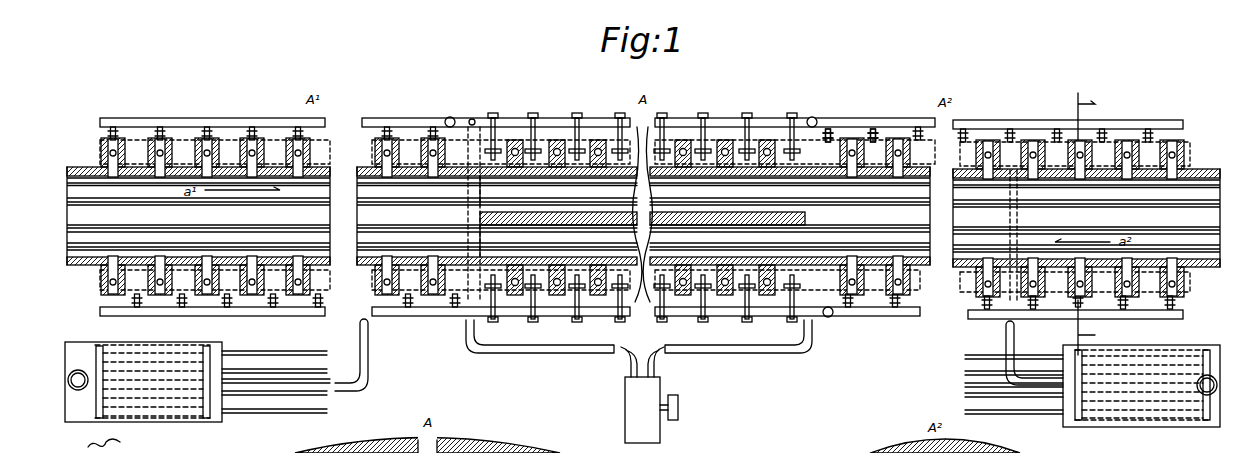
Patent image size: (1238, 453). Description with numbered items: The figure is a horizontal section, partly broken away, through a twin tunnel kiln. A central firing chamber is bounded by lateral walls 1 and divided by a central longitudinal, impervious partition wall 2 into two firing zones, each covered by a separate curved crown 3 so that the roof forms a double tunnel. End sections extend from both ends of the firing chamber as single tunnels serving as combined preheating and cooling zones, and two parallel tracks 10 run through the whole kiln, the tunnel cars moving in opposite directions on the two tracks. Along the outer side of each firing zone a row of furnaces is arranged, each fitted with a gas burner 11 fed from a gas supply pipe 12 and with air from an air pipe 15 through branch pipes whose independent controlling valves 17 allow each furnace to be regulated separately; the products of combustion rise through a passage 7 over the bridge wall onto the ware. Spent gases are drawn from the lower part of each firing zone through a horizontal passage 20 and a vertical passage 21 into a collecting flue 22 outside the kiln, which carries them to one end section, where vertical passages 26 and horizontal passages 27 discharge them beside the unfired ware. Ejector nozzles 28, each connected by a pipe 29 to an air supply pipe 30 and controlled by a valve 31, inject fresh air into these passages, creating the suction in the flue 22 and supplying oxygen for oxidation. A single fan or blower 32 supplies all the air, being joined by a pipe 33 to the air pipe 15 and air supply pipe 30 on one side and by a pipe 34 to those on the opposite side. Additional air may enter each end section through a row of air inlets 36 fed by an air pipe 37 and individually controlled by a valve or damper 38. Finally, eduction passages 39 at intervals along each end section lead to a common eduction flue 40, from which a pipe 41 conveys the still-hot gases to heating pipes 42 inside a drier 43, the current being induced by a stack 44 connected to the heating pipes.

The lateral wall 1 is at (690, 268).
The longitudinal partition wall 2 is at (565, 213).
The crown 3 is at (352, 440).
The passage 7 is at (483, 178).
The track 10 is at (643, 217).
The gas burner 11 is at (540, 132).
The gas supply pipe 12 is at (660, 150).
The air pipe 15 is at (520, 118).
The controlling valve 17 is at (622, 116).
The horizontal passage 20 is at (592, 268).
The vertical passage 21 is at (683, 148).
The collecting flue 22 is at (372, 162).
The vertical passage 26 is at (255, 145).
The horizontal passage 27 is at (300, 152).
The ejector nozzle 28 is at (213, 140).
The pipe 29 is at (166, 130).
The air supply pipe 30 is at (325, 120).
The valve 31 is at (120, 130).
The fan or blower 32 is at (649, 395).
The pipe 33 is at (717, 353).
The pipe 34 is at (574, 353).
The air inlet 36 is at (322, 300).
The air pipe 37 is at (316, 316).
The controlling valve or damper 38 is at (272, 308).
The eduction passage 39 is at (108, 275).
The eduction flue 40 is at (100, 289).
The pipe 41 is at (368, 352).
The heating pipe 42 is at (145, 350).
The drier 43 is at (190, 345).
The stack 44 is at (78, 370).